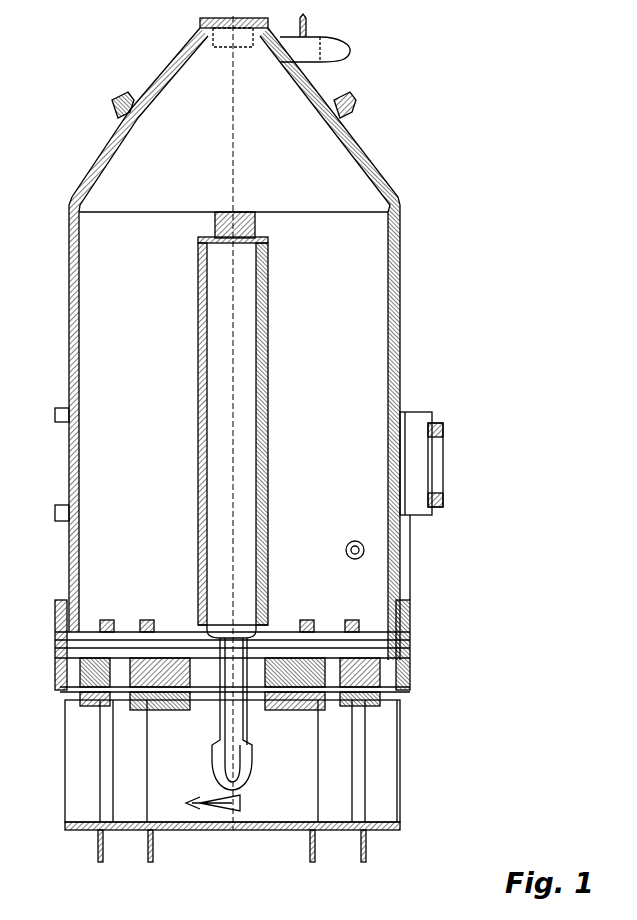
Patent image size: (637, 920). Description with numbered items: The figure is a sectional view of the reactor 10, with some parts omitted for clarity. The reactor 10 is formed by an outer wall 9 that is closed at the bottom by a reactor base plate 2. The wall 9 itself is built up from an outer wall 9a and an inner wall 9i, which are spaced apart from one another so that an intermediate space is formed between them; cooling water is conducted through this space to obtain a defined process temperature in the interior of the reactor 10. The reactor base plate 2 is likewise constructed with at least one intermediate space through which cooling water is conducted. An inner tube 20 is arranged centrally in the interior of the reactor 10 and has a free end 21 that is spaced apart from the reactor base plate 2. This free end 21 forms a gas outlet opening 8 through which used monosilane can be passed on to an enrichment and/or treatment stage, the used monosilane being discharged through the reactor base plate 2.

The reactor 10 is at (264, 438).
The outer wall 9 is at (236, 344).
The outer wall 9a is at (70, 217).
The inner wall 9i is at (388, 300).
The gas outlet opening 8 is at (218, 232).
The inner tube 20 is at (268, 363).
The free end 21 is at (257, 232).
The reactor base plate 2 is at (397, 722).